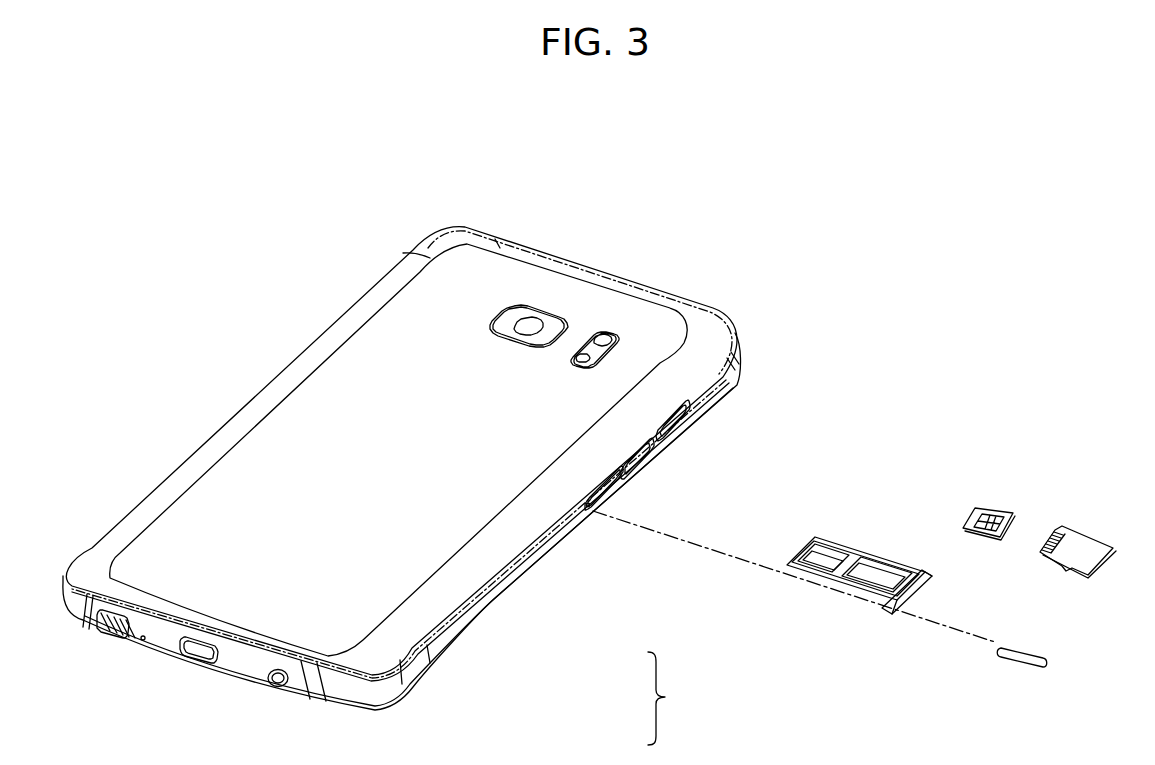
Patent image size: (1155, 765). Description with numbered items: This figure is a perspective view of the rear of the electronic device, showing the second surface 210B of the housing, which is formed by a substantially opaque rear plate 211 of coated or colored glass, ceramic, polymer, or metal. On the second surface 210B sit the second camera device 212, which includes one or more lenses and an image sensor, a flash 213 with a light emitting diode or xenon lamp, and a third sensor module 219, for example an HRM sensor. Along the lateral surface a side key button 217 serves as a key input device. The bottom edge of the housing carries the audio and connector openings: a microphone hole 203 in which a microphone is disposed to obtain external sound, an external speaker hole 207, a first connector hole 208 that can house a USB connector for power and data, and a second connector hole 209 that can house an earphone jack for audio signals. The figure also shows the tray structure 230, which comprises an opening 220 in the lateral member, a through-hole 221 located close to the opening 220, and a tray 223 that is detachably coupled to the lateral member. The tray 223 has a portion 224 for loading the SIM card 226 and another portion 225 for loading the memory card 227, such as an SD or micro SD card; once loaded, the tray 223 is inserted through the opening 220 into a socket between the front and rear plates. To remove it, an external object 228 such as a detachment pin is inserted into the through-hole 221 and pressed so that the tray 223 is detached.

The microphone hole 203 is at (143, 642).
The external speaker hole 207 is at (101, 625).
The first connector hole 208 is at (203, 664).
The second connector hole 209 is at (275, 689).
The second surface 210B is at (378, 382).
The rear plate 211 is at (263, 488).
The second camera device 212 is at (533, 323).
The flash 213 is at (604, 339).
The side key button 217 is at (695, 419).
The third sensor module 219 is at (622, 348).
The opening 220 is at (623, 475).
The through-hole 221 is at (586, 509).
The tray 223 is at (852, 600).
The portion for loading the SIM card 224 is at (838, 548).
The portion for loading the memory card 225 is at (882, 567).
The SIM card 226 is at (996, 503).
The memory card 227 is at (1085, 540).
The external object 228 is at (1005, 658).
The tray structure 230 is at (794, 628).